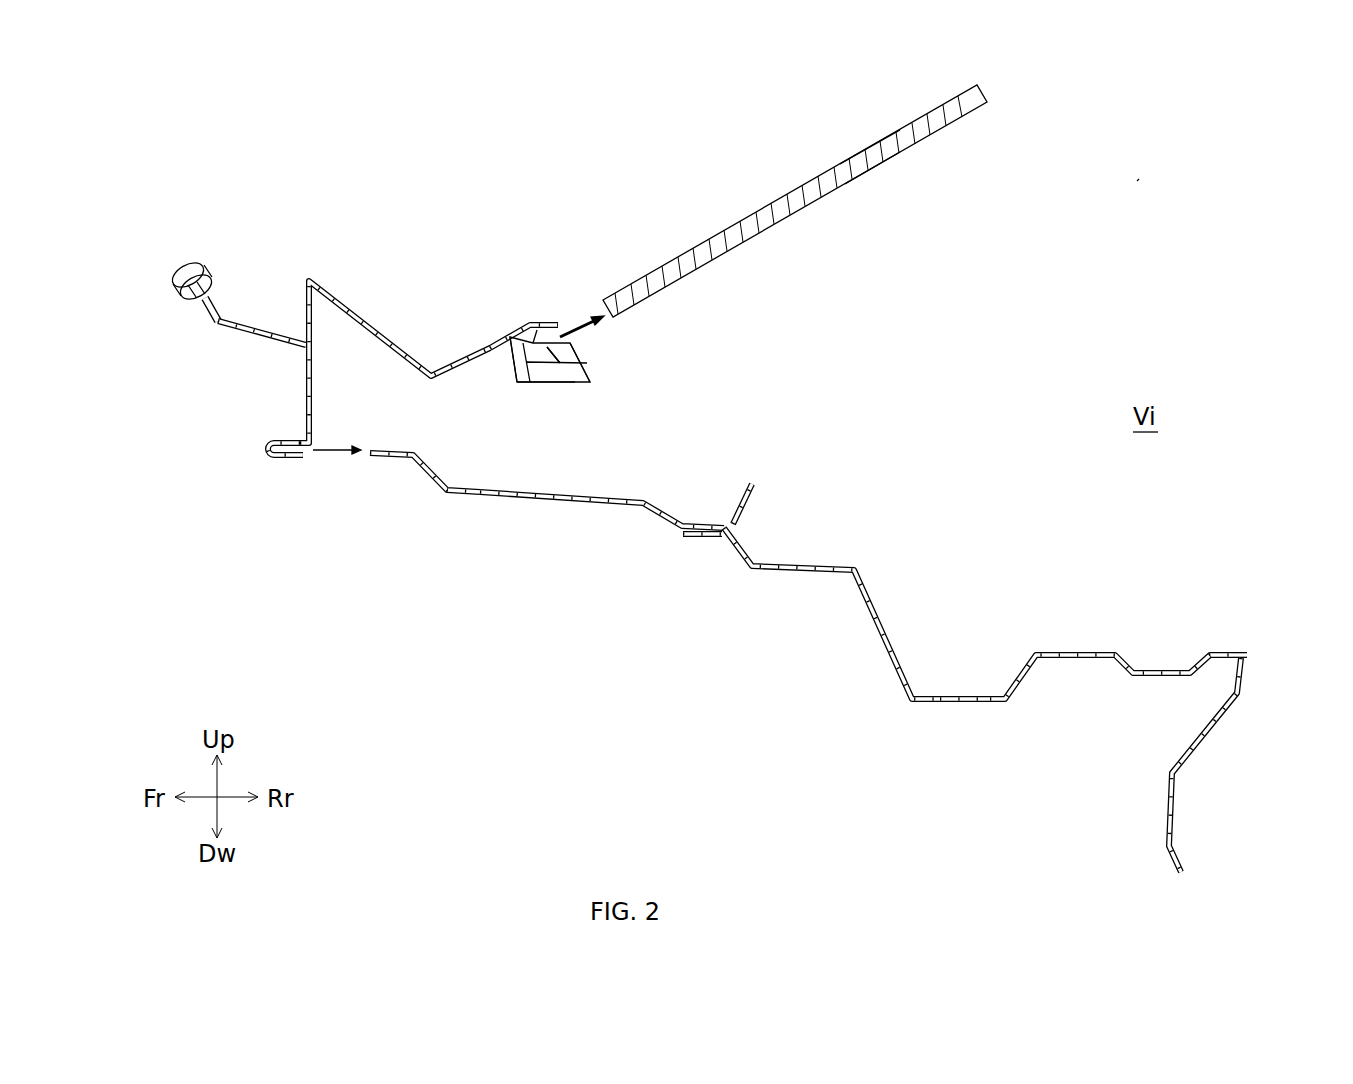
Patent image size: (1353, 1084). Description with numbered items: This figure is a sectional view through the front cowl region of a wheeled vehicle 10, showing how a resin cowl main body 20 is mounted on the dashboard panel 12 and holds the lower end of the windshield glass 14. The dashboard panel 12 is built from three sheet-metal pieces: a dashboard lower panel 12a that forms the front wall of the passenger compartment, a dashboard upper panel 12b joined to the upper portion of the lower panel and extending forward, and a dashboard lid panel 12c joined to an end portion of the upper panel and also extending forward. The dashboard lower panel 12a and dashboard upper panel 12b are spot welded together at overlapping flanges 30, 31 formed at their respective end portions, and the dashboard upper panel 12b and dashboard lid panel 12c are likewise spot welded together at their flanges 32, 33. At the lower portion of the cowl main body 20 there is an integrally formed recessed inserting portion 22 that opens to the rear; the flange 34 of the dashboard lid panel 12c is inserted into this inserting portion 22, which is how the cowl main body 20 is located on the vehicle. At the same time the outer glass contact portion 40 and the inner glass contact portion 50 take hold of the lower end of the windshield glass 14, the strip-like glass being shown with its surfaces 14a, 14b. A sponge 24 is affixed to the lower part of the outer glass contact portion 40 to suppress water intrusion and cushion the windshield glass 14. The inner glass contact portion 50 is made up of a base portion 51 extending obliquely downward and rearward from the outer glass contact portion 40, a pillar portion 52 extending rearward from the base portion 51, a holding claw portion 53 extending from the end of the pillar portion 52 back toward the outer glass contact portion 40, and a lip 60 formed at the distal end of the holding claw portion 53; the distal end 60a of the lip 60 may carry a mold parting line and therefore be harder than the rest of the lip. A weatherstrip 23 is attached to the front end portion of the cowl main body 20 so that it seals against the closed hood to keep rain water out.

The wheeled vehicle 10 is at (1148, 173).
The dashboard panel 12 is at (886, 684).
The dashboard lower panel 12a is at (1165, 820).
The dashboard upper panel 12b is at (953, 703).
The dashboard lid panel 12c is at (483, 496).
The windshield glass 14 is at (965, 129).
The lower surface of cross member 14a is at (883, 163).
The upper surface of cross member 14b is at (873, 143).
The cowl main body 20 is at (393, 313).
The inserting portion 22 is at (277, 462).
The weatherstrip 23 is at (187, 312).
The sponge 24 is at (557, 327).
The flange 30 is at (1244, 672).
The flange 31 is at (1243, 652).
The flange 32 is at (710, 539).
The flange 33 is at (716, 520).
The flange 34 is at (392, 458).
The outer glass contact portion 40 is at (553, 309).
The inner glass contact portion 50 is at (645, 447).
The base portion 51 is at (524, 383).
The pillar portion 52 is at (551, 383).
The holding claw portion 53 is at (587, 355).
The lip 60 is at (562, 356).
The distal end of lip 60a is at (515, 362).